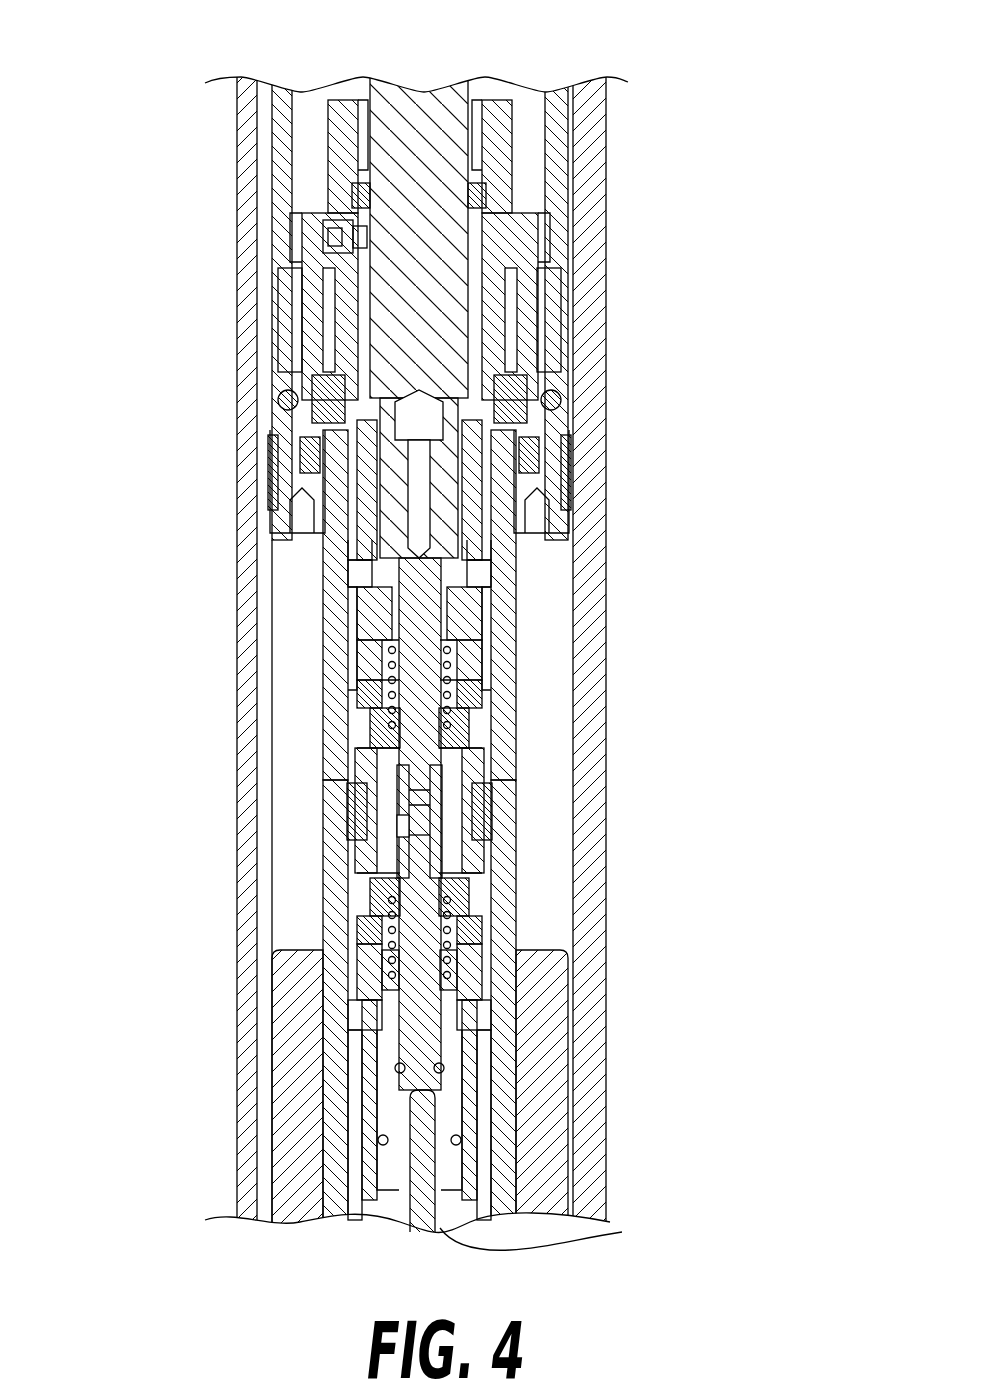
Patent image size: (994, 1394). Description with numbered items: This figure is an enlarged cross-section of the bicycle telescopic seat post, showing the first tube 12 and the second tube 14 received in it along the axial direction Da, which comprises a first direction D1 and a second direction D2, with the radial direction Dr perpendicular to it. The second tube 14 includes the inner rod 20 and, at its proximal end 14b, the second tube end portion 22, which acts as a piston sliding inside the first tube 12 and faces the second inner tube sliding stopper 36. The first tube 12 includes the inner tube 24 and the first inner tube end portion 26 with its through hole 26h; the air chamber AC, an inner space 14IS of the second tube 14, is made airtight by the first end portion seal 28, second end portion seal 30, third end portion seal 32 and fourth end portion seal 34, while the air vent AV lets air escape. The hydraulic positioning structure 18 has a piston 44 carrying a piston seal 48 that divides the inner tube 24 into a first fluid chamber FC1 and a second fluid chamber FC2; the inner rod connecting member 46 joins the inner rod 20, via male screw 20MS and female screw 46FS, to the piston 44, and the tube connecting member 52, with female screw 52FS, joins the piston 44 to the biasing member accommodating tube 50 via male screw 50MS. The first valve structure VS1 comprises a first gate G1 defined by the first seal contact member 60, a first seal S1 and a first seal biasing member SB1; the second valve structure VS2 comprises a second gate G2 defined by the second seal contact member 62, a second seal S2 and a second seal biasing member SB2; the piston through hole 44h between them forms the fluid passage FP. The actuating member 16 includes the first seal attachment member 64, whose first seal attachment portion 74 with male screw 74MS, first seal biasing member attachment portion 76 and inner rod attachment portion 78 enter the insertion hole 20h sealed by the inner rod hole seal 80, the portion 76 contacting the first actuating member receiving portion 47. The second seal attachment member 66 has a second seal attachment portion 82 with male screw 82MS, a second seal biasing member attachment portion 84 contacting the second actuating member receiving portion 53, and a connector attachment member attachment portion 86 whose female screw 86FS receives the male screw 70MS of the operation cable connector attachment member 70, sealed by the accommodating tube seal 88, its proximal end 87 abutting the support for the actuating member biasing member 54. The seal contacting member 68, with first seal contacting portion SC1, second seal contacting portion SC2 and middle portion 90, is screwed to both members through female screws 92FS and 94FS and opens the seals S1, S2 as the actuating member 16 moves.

The first tube 12 is at (590, 138).
The second tube 14 is at (560, 195).
The proximal end 14b is at (562, 385).
The inner space 14IS is at (315, 105).
The actuating member 16 is at (768, 558).
The hydraulic positioning structure 18 is at (63, 1243).
The inner rod 20 is at (420, 108).
The insertion hole 20h is at (440, 420).
The male screw 20MS is at (460, 490).
The second tube end portion 22 is at (560, 440).
The inner tube 24 is at (450, 535).
The first inner tube end portion 26 is at (355, 318).
The through hole 26h is at (350, 175).
The first end portion seal 28 is at (598, 368).
The second end portion seal 30 is at (440, 455).
The third end portion seal 32 is at (280, 378).
The fourth end portion seal 34 is at (318, 198).
The second inner tube sliding stopper 36 is at (535, 1200).
The piston 44 is at (397, 787).
The piston through hole 44h is at (395, 820).
The inner rod connecting member 46 is at (340, 597).
The female screw 46FS is at (350, 466).
The first actuating member receiving portion 47 is at (350, 628).
The piston seal 48 is at (340, 812).
The biasing member accommodating tube 50 is at (300, 1202).
The male screw 50MS is at (320, 1185).
The tube connecting member 52 is at (340, 1012).
The female screw 52FS is at (385, 1160).
The second actuating member receiving portion 53 is at (360, 982).
The actuating member biasing member 54 is at (440, 1242).
The first seal contact member 60 is at (380, 722).
The second seal contact member 62 is at (385, 900).
The first seal attachment member 64 is at (692, 560).
The second seal attachment member 66 is at (711, 895).
The seal contacting member 68 is at (726, 733).
The operation cable connector attachment member 70 is at (445, 1165).
The male screw 70MS is at (450, 1135).
The first seal attachment portion 74 is at (460, 650).
The male screw 74MS is at (470, 688).
The first seal biasing member attachment portion 76 is at (450, 612).
The inner rod attachment portion 78 is at (455, 585).
The inner rod hole seal 80 is at (335, 562).
The second seal attachment portion 82 is at (470, 922).
The male screw 82MS is at (475, 890).
The second seal biasing member attachment portion 84 is at (465, 950).
The connector attachment member attachment portion 86 is at (460, 978).
The female screw 86FS is at (465, 1010).
The proximal end 87 is at (460, 1215).
The accommodating tube seal 88 is at (365, 1042).
The middle portion 90 is at (460, 808).
The female screw 92FS is at (460, 750).
The female screw 94FS is at (460, 868).
The air chamber AC is at (305, 16).
The air vent AV is at (265, 103).
The first fluid chamber FC1 is at (355, 508).
The second fluid chamber FC2 is at (372, 1072).
The fluid passage FP is at (405, 848).
The first gate G1 is at (380, 747).
The second gate G2 is at (380, 875).
The first seal S1 is at (385, 690).
The second seal S2 is at (385, 925).
The first seal biasing member SB1 is at (380, 665).
The second seal biasing member SB2 is at (385, 955).
The first seal contacting portion SC1 is at (450, 778).
The second seal contacting portion SC2 is at (450, 838).
The first valve structure VS1 is at (128, 774).
The second valve structure VS2 is at (128, 977).
The radial direction Dr is at (780, 212).
The first direction D1 is at (799, 258).
The second direction D2 is at (799, 168).
The axial direction Da is at (799, 341).